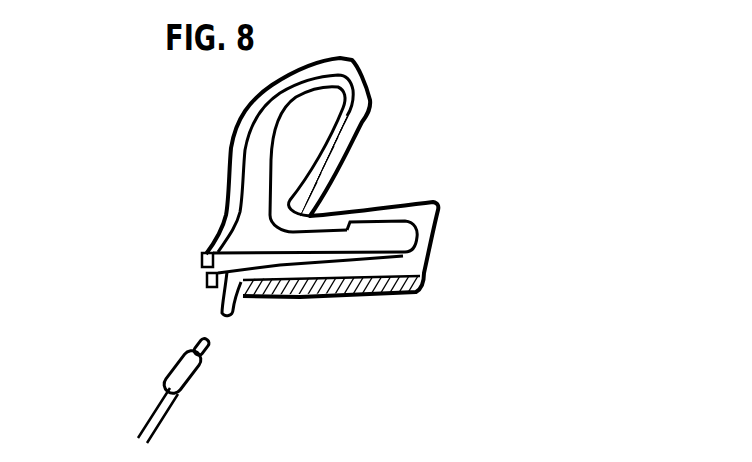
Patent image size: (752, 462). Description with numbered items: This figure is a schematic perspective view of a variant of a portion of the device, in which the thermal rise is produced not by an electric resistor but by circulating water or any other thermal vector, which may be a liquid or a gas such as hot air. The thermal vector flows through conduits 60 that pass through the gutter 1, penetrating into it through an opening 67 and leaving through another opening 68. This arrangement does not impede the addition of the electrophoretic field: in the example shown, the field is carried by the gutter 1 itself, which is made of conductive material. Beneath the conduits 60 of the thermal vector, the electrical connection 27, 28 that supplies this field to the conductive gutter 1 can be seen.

The conduits 60 is at (360, 80).
The gutter 1 is at (357, 128).
The opening 67 is at (190, 264).
The opening 68 is at (192, 291).
The connection 27 is at (240, 312).
The connection 28 is at (200, 373).